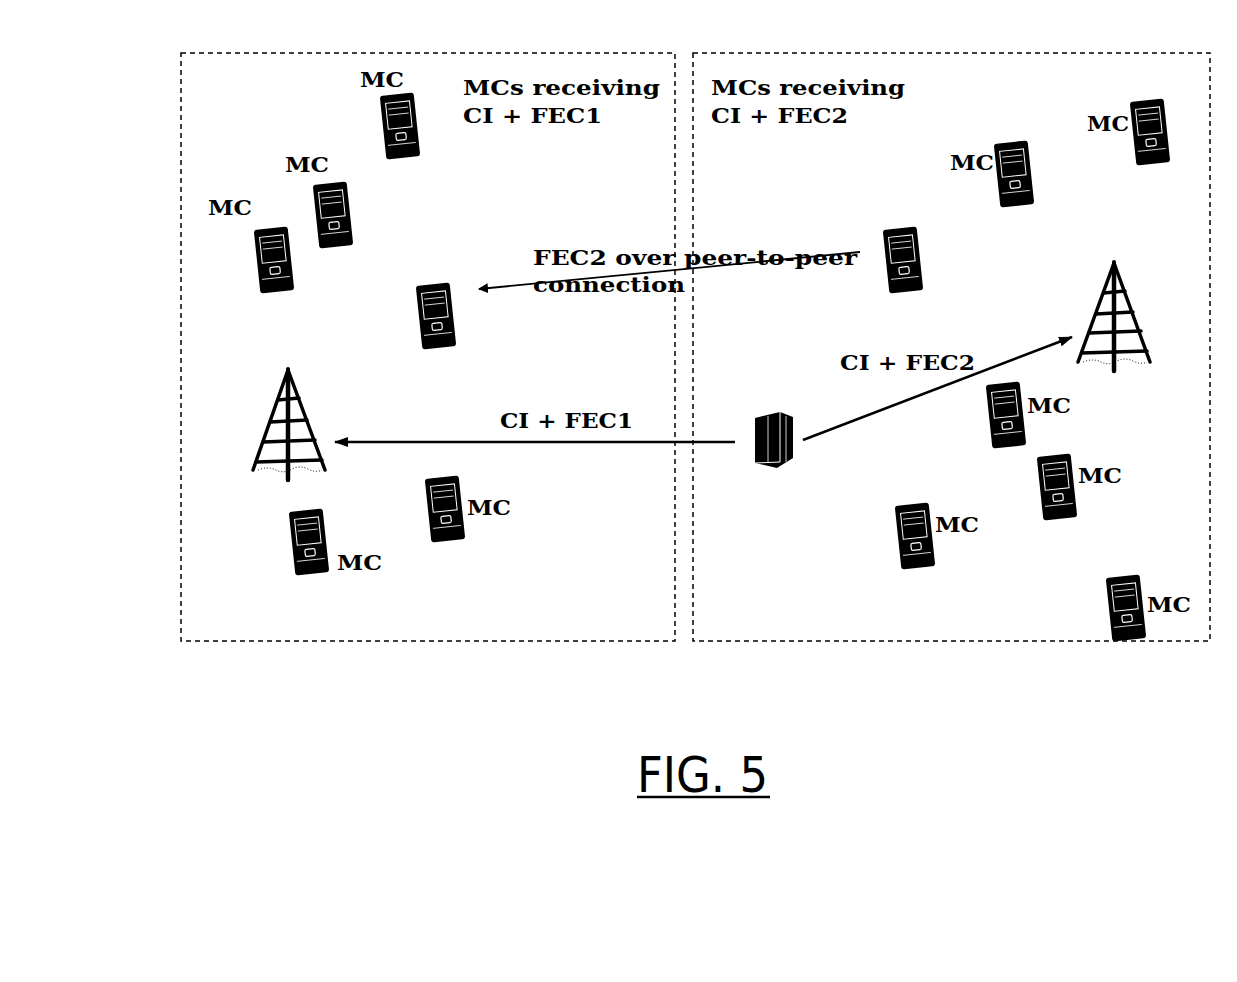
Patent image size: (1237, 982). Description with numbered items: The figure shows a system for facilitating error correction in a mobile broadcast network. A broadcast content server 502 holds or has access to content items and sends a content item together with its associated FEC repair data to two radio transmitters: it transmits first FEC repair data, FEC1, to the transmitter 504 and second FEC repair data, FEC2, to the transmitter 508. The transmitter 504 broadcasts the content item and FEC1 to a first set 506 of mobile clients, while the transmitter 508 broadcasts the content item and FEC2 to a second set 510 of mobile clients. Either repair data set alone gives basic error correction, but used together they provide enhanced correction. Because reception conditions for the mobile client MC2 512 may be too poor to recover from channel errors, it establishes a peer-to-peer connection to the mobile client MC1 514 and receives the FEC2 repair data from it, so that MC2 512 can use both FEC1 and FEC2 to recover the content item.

The broadcast content server 502 is at (756, 410).
The transmitter 504 is at (277, 423).
The first set of mobile clients 506 is at (428, 333).
The transmitter 508 is at (1086, 315).
The second set of mobile clients 510 is at (951, 333).
The mobile client MC2 512 is at (442, 301).
The mobile client MC1 514 is at (901, 254).